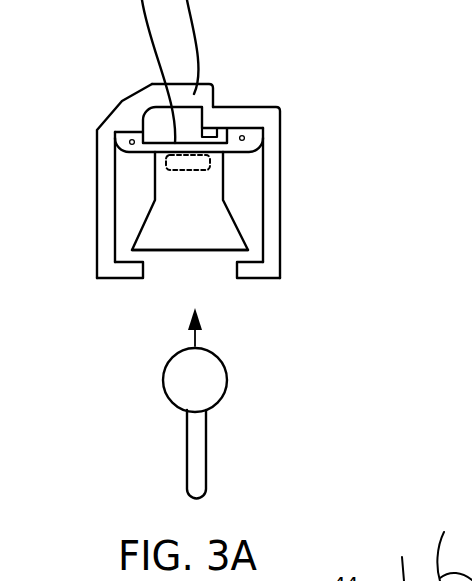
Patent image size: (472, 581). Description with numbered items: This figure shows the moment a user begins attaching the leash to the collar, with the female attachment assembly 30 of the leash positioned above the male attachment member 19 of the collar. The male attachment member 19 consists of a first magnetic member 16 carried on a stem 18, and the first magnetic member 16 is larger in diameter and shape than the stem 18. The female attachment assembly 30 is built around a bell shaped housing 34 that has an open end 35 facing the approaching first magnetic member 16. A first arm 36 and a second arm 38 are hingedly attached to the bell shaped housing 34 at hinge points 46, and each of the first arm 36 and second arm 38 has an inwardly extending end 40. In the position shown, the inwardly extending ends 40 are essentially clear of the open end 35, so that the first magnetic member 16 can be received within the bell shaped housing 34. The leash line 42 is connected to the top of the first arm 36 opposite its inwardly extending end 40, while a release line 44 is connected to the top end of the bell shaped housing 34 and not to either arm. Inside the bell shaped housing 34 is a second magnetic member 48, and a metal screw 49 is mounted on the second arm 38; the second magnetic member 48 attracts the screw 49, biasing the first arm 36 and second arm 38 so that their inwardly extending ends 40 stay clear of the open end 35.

The female attachment assembly 30 is at (344, 100).
The first arm 36 is at (100, 160).
The second arm 38 is at (273, 168).
The inwardly extending end 40 is at (118, 280).
The hinge points 46 is at (131, 140).
The metal screw 49 is at (206, 127).
The second magnetic member 48 is at (183, 172).
The bell shaped housing 34 is at (232, 220).
The open end 35 is at (180, 252).
The release line 44 is at (146, 33).
The leash line 42 is at (192, 20).
The male attachment member 19 is at (196, 423).
The first magnetic member 16 is at (228, 380).
The stem 18 is at (207, 447).